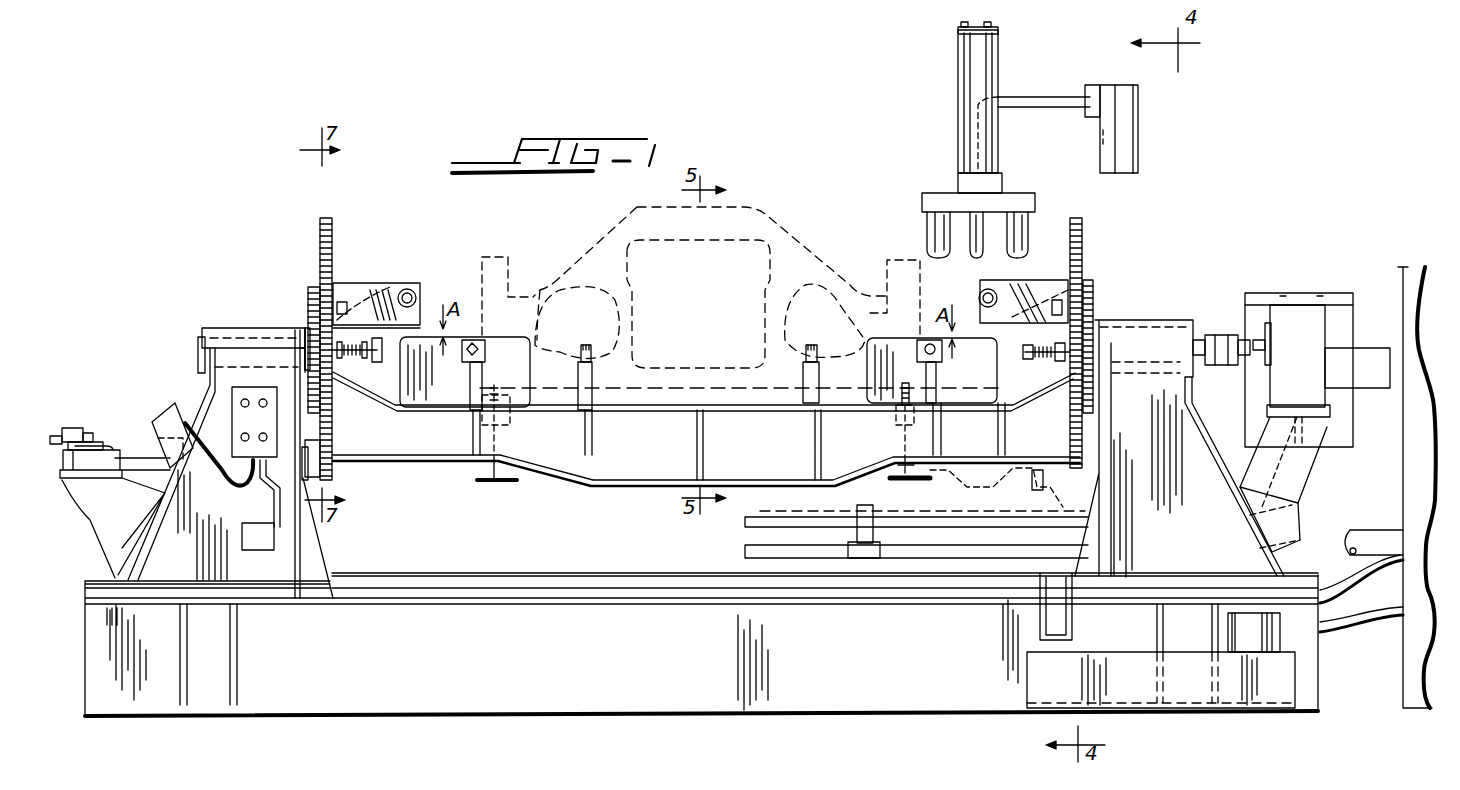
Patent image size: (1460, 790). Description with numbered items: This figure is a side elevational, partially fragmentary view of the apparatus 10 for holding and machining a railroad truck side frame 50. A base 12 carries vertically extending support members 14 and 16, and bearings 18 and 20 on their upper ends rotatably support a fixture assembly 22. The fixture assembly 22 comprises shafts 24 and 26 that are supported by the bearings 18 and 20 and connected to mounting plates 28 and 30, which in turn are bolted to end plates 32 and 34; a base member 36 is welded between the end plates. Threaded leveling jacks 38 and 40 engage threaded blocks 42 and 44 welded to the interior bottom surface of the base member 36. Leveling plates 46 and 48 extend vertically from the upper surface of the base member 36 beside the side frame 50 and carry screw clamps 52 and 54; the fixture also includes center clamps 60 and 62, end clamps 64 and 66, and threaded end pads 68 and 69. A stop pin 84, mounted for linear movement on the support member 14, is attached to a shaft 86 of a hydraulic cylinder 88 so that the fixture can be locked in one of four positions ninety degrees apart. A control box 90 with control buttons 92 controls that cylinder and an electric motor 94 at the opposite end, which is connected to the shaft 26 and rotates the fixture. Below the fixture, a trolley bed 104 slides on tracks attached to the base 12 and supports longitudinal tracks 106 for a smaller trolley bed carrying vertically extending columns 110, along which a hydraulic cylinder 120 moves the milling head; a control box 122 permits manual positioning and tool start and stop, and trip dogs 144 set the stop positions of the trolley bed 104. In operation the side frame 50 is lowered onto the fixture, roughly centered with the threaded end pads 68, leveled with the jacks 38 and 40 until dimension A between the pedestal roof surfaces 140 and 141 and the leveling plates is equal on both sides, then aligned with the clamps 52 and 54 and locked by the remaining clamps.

The apparatus 10 is at (282, 186).
The base 12 is at (138, 714).
The support member 14 is at (302, 533).
The support member 16 is at (1296, 522).
The bearing 18 is at (272, 328).
The bearing 20 is at (1168, 322).
The fixture assembly 22 is at (607, 494).
The shaft 24 is at (217, 335).
The shaft 26 is at (1128, 327).
The mounting plate 28 is at (318, 287).
The mounting plate 30 is at (1094, 285).
The end plate 32 is at (332, 216).
The end plate 34 is at (1082, 224).
The base member 36 is at (430, 465).
The leveling jack 38 is at (497, 486).
The leveling jack 40 is at (900, 480).
The threaded block 42 is at (500, 440).
The threaded block 44 is at (900, 430).
The leveling plate 46 is at (486, 340).
The leveling plate 48 is at (894, 340).
The railroad truck side frame 50 is at (782, 222).
The screw clamp 52 is at (486, 352).
The screw clamp 54 is at (920, 350).
The center clamp 60 is at (585, 345).
The center clamp 62 is at (822, 327).
The end clamp 64 is at (408, 290).
The end clamp 66 is at (998, 292).
The threaded end pad 68 is at (370, 360).
The threaded end pad 69 is at (1035, 360).
The stop pin 84 is at (318, 480).
The shaft 86 is at (138, 452).
The hydraulic cylinder 88 is at (98, 428).
The control box 90 is at (236, 470).
The control buttons 92 is at (262, 400).
The electric motor 94 is at (1300, 295).
The trolley bed 104 is at (1010, 545).
The longitudinal tracks 106 is at (1063, 490).
The columns 110 is at (928, 245).
The hydraulic cylinder 120 is at (1000, 52).
The control box 122 is at (1138, 132).
The pedestal roof surface 140 is at (480, 300).
The pedestal roof surface 141 is at (968, 340).
The trip dogs 144 is at (857, 526).